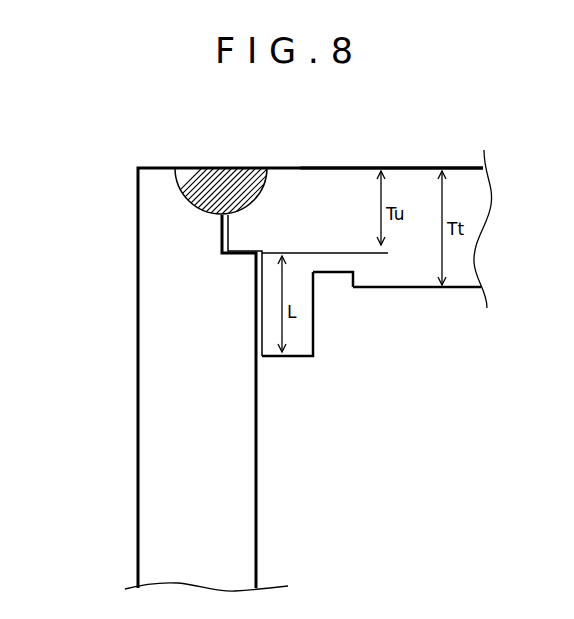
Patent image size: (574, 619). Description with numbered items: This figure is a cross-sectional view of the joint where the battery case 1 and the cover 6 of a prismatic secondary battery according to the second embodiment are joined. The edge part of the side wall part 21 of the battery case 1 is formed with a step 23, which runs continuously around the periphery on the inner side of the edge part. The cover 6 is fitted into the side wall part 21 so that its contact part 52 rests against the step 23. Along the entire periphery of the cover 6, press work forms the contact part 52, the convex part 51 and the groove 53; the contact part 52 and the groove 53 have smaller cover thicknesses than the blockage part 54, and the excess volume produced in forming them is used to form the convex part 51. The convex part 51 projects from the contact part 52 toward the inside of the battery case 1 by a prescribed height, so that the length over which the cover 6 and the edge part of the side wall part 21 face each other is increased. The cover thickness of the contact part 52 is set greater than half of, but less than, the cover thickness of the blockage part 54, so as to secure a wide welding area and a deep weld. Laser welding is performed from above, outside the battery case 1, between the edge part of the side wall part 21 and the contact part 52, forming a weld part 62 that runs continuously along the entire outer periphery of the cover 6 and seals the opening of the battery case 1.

The battery case 1 is at (127, 491).
The cover 6 is at (412, 183).
The side wall part 21 is at (162, 423).
The step 23 is at (247, 251).
The convex part 51 is at (303, 358).
The contact part 52 is at (237, 232).
The groove 53 is at (333, 274).
The blockage part 54 is at (418, 289).
The weld part 62 is at (243, 167).